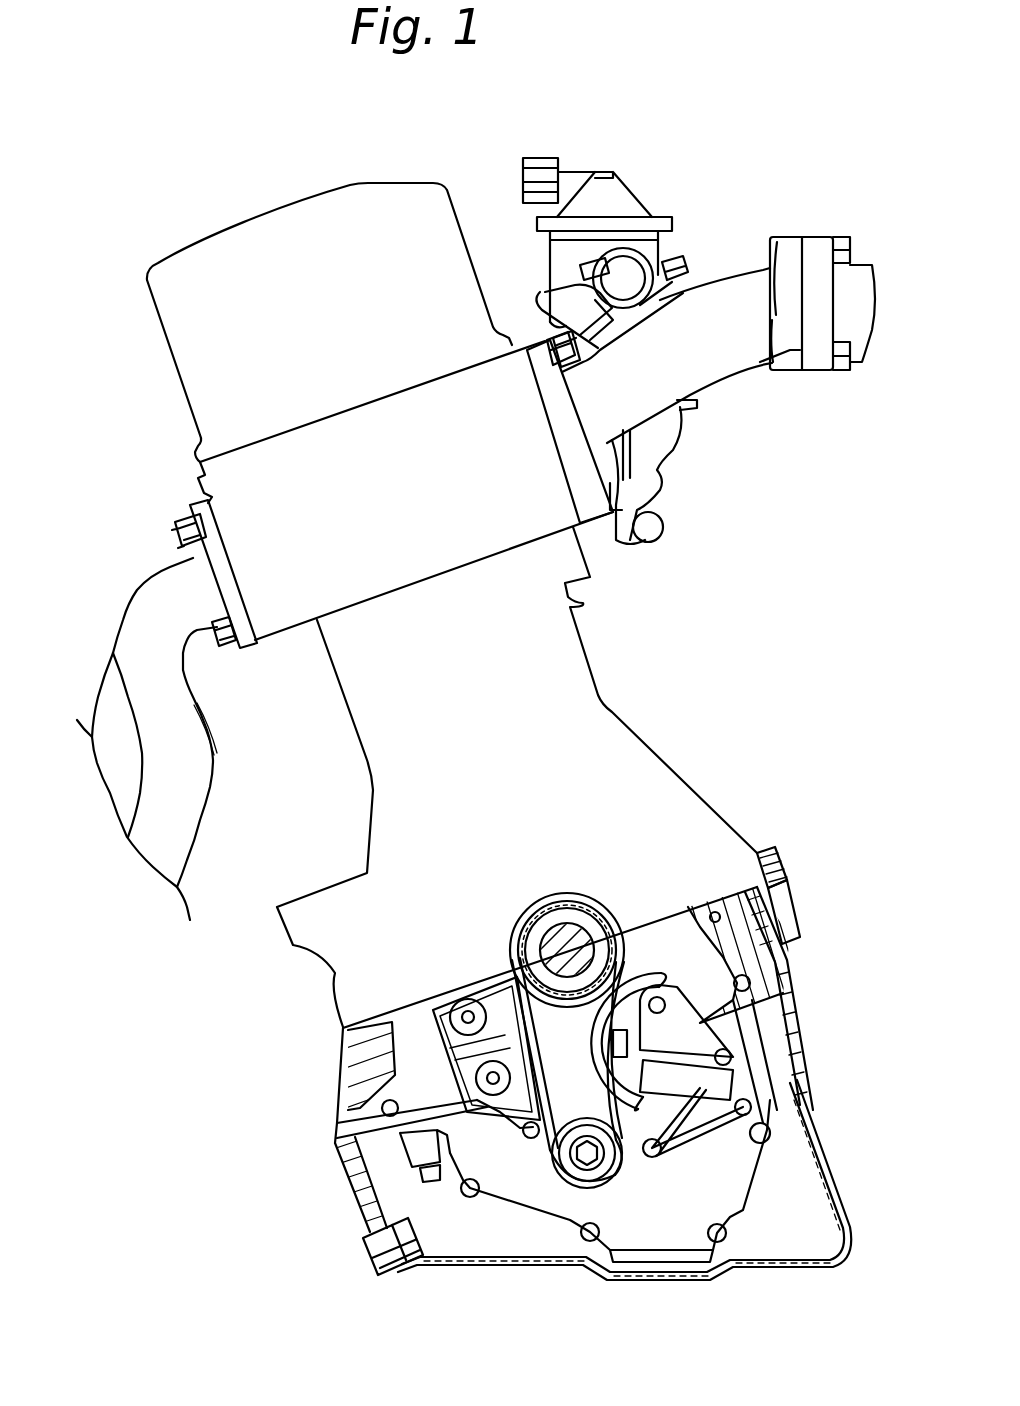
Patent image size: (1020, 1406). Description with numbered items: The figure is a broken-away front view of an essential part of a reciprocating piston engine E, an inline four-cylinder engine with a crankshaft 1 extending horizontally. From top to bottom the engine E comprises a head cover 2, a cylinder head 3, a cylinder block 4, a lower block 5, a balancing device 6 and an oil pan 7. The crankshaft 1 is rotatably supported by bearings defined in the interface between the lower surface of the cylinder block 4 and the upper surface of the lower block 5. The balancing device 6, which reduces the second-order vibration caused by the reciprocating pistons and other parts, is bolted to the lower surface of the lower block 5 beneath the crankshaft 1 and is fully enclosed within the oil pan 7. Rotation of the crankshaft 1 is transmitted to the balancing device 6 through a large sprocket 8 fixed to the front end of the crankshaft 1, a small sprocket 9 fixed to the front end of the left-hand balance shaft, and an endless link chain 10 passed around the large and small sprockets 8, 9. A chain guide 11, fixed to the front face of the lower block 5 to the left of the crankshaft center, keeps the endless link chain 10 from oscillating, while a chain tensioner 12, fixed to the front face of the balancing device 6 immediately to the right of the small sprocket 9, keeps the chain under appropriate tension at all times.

The crankshaft 1 is at (580, 930).
The head cover 2 is at (200, 383).
The cylinder head 3 is at (233, 503).
The cylinder block 4 is at (365, 718).
The lower block 5 is at (378, 1060).
The balancing device 6 is at (656, 1212).
The oil pan 7 is at (837, 1177).
The large sprocket 8 is at (543, 913).
The small sprocket 9 is at (578, 1177).
The endless link chain 10 is at (527, 1137).
The chain guide 11 is at (500, 1000).
The chain tensioner 12 is at (707, 1037).
The engine E is at (686, 207).